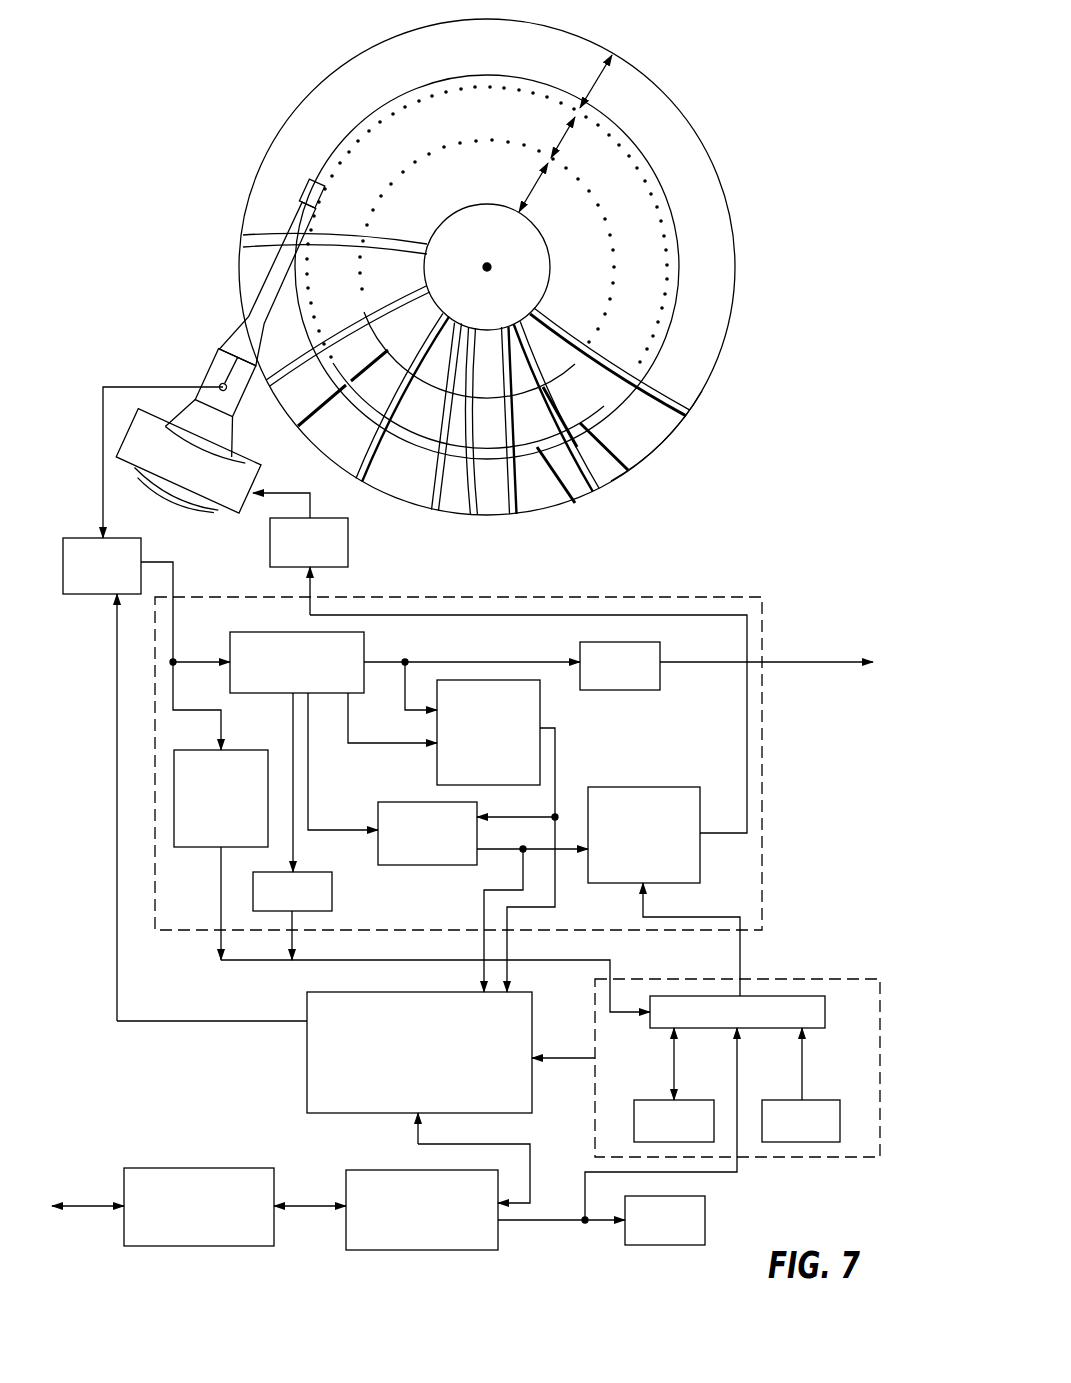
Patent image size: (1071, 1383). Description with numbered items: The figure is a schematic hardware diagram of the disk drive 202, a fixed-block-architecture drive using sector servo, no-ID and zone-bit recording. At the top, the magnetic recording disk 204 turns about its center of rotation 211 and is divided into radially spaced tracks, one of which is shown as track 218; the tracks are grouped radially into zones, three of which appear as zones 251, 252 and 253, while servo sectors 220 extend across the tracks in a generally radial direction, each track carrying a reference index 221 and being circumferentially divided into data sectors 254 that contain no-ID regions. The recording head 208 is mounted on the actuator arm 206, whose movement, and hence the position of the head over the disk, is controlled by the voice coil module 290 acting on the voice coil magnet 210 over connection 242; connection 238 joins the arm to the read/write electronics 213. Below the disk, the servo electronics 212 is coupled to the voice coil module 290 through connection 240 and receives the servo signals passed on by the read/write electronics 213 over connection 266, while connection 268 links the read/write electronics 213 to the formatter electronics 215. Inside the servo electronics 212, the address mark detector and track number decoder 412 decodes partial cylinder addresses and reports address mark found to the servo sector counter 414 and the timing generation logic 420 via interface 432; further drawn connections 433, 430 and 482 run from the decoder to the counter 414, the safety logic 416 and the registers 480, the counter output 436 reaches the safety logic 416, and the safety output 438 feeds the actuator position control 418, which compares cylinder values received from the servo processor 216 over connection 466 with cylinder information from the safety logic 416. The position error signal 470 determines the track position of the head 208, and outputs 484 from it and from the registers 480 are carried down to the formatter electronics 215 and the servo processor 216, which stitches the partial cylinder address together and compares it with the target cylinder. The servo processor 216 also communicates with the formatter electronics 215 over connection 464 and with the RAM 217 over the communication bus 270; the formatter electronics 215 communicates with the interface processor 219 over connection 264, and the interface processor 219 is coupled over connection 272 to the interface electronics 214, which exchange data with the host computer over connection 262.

The disk drive 202 is at (185, 122).
The magnetic recording disk 204 is at (305, 104).
The actuator arm 206 is at (231, 322).
The recording head 208 is at (300, 188).
The voice coil magnet 210 is at (242, 460).
The center of rotation 211 is at (490, 266).
The servo electronics 212 is at (613, 597).
The read/write electronics 213 is at (83, 597).
The interface electronics 214 is at (243, 1168).
The formatter electronics 215 is at (307, 1080).
The servo processor 216 is at (825, 1158).
The RAM 217 is at (705, 1224).
The track 218 is at (388, 106).
The interface processor 219 is at (372, 1170).
The servo sectors 220 is at (590, 495).
The reference index 221 is at (685, 417).
The read signal line 238 is at (127, 385).
The control line 240 is at (533, 615).
The VCM drive line 242 is at (281, 489).
The zone 251 is at (597, 82).
The zone 252 is at (563, 137).
The zone 253 is at (535, 183).
The data sectors 254 is at (657, 447).
The host interface bus 262 is at (90, 1206).
The formatter control line 264 is at (530, 1165).
The read data line 266 is at (162, 562).
The R/W data line 268 is at (117, 935).
The communication bus 270 is at (552, 1222).
The interface bus 272 is at (310, 1206).
The voice coil module 290 is at (348, 556).
The address mark detector and track number decoder 412 is at (230, 641).
The servo sector counter 414 is at (540, 713).
The safety logic 416 is at (378, 855).
The actuator position control 418 is at (683, 787).
The timing generation logic 420 is at (630, 691).
The detect-to-safety line 430 is at (308, 797).
The interface 432 is at (385, 658).
The detect-to-counter line 433 is at (398, 745).
The counter output line 436 is at (556, 760).
The safety output line 438 is at (484, 904).
The servo processor to formatter line 464 is at (562, 1058).
The actuator control input line 466 is at (740, 958).
The position error signal 470 is at (190, 848).
The registers 480 is at (332, 895).
The detect-to-register line 482 is at (293, 735).
The PES/register output line 484 is at (557, 960).